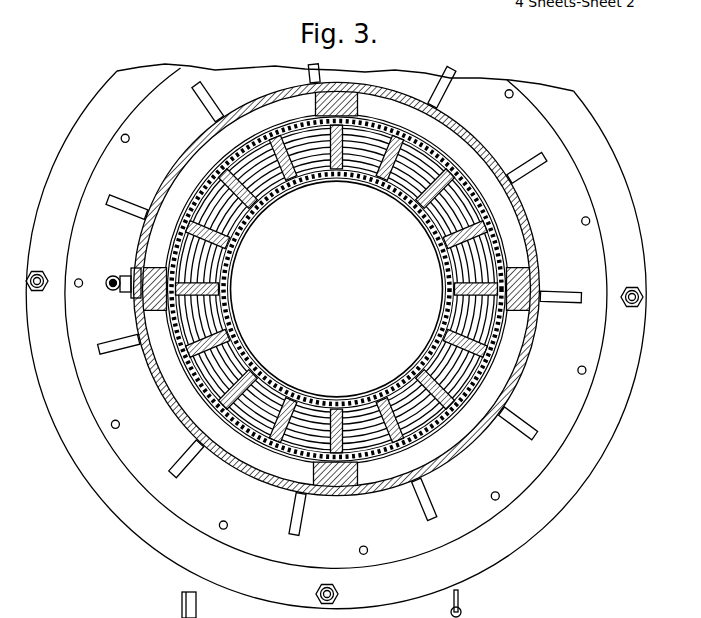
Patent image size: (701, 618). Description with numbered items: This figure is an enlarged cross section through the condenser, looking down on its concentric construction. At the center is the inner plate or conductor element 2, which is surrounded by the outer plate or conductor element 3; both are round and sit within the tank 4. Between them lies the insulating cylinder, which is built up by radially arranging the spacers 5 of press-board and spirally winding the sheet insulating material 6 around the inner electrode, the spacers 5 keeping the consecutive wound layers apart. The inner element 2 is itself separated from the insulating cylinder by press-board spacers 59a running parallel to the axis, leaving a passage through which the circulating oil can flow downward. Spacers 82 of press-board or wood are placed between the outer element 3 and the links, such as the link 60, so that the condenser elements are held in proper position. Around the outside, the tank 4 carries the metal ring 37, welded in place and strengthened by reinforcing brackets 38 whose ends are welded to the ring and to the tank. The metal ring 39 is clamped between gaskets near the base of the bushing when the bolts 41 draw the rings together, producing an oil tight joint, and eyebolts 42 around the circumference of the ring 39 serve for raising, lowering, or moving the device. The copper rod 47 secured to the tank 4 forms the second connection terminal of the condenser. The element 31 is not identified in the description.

The inner plate or conductor element 2 is at (442, 267).
The outer plate or conductor element 3 is at (437, 432).
The tank 4 is at (170, 406).
The spacers 5 is at (229, 418).
The sheet insulating material 6 is at (189, 377).
The post 31 is at (197, 612).
The metal ring 37 is at (336, 318).
The reinforcing brackets 38 is at (303, 514).
The metal ring 39 is at (336, 336).
The bolts 41 is at (222, 518).
The eyebolts 42 is at (38, 291).
The copper rod 47 is at (110, 291).
The spacers 59a is at (262, 208).
The link 60 is at (355, 484).
The spacers 82 is at (310, 470).